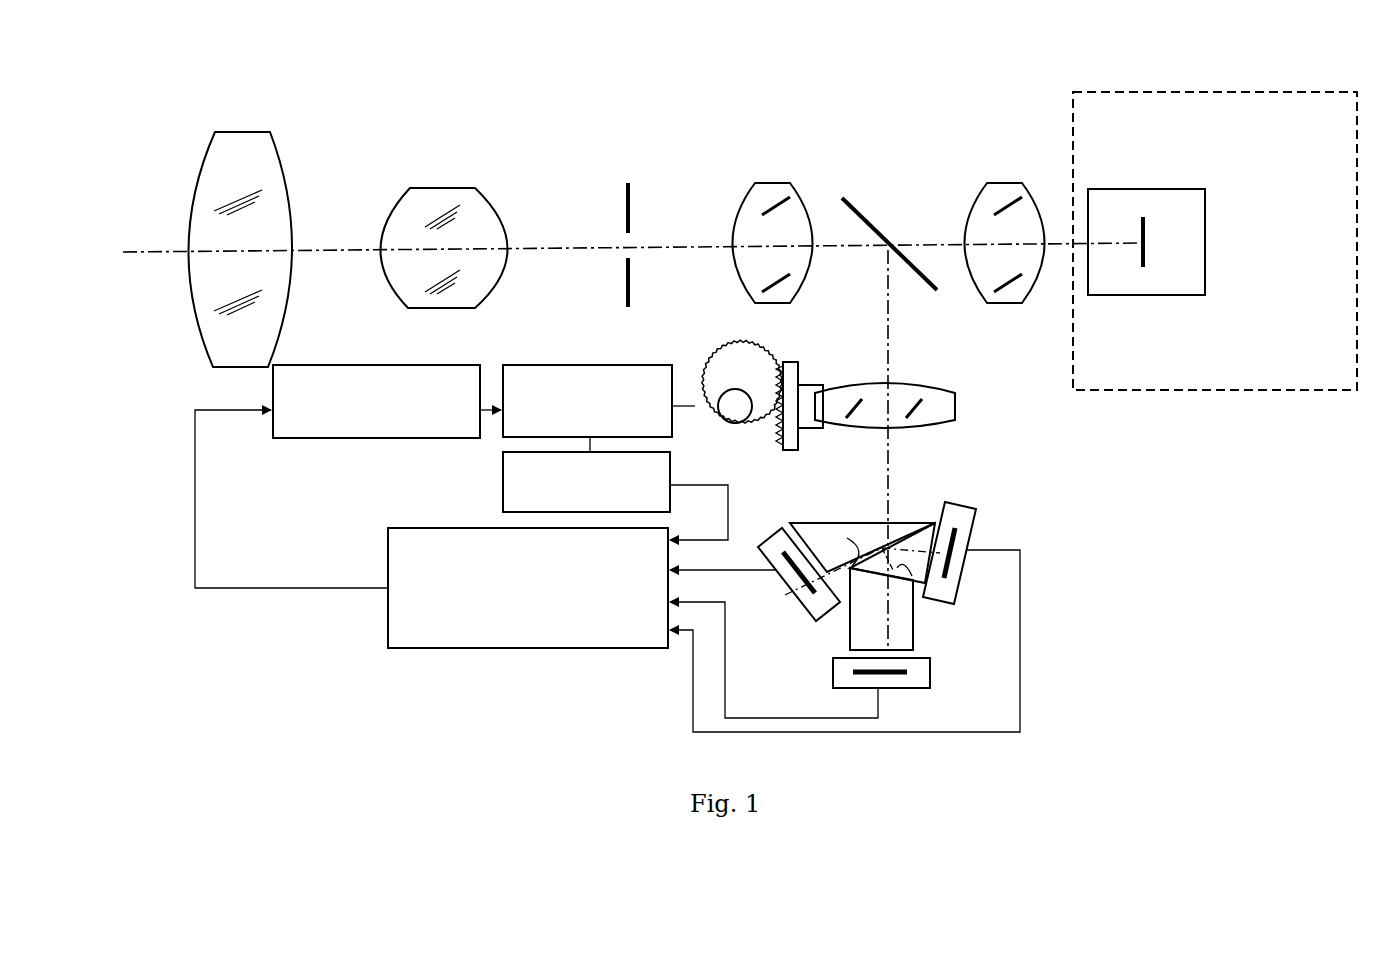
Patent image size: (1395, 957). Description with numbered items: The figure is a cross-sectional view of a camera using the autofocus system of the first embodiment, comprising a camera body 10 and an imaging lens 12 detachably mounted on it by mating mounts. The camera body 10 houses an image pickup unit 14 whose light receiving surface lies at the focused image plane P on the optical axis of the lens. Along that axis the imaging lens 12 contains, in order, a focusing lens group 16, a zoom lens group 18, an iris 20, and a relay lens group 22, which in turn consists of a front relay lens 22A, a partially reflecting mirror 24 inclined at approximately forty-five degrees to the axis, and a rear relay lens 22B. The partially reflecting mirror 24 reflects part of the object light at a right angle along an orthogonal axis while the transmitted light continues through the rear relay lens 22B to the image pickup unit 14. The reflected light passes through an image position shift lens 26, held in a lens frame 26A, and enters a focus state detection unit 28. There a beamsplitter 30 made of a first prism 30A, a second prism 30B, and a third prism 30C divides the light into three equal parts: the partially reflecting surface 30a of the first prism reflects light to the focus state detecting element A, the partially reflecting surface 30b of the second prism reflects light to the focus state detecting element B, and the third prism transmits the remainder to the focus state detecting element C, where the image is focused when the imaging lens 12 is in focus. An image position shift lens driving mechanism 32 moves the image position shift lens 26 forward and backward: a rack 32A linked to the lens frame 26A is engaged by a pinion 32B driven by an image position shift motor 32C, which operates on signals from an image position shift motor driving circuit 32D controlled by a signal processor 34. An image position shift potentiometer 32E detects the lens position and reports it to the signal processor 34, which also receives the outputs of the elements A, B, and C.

The camera body 10 is at (1268, 92).
The imaging lens 12 is at (773, 87).
The image pickup unit 14 is at (1148, 196).
The focusing lens group 16 is at (248, 124).
The zoom lens group 18 is at (445, 176).
The iris 20 is at (632, 178).
The relay lens group 22 is at (1053, 126).
The front relay lens 22A is at (776, 182).
The rear relay lens 22B is at (1006, 180).
The partially reflecting mirror 24 is at (869, 220).
The image position shift lens 26 is at (956, 404).
The lens frame 26A is at (820, 388).
The focus state detection unit 28 is at (1020, 506).
The beamsplitter 30 is at (932, 510).
The first prism 30A is at (820, 520).
The second prism 30B is at (912, 516).
The third prism 30C is at (850, 612).
The partially reflecting surface 30a is at (838, 530).
The partially reflecting surface 30b is at (912, 585).
The image position shift lens driving mechanism 32 is at (598, 340).
The rack 32A is at (790, 364).
The pinion 32B is at (730, 368).
The image position shift motor 32C is at (554, 366).
The image position shift motor driving circuit 32D is at (384, 366).
The image position shift potentiometer 32E is at (503, 486).
The signal processor 34 is at (392, 528).
The focus state detecting element A is at (755, 574).
The focus state detecting element B is at (845, 617).
The focus state detecting element C is at (800, 660).
The focused image plane P is at (1148, 244).